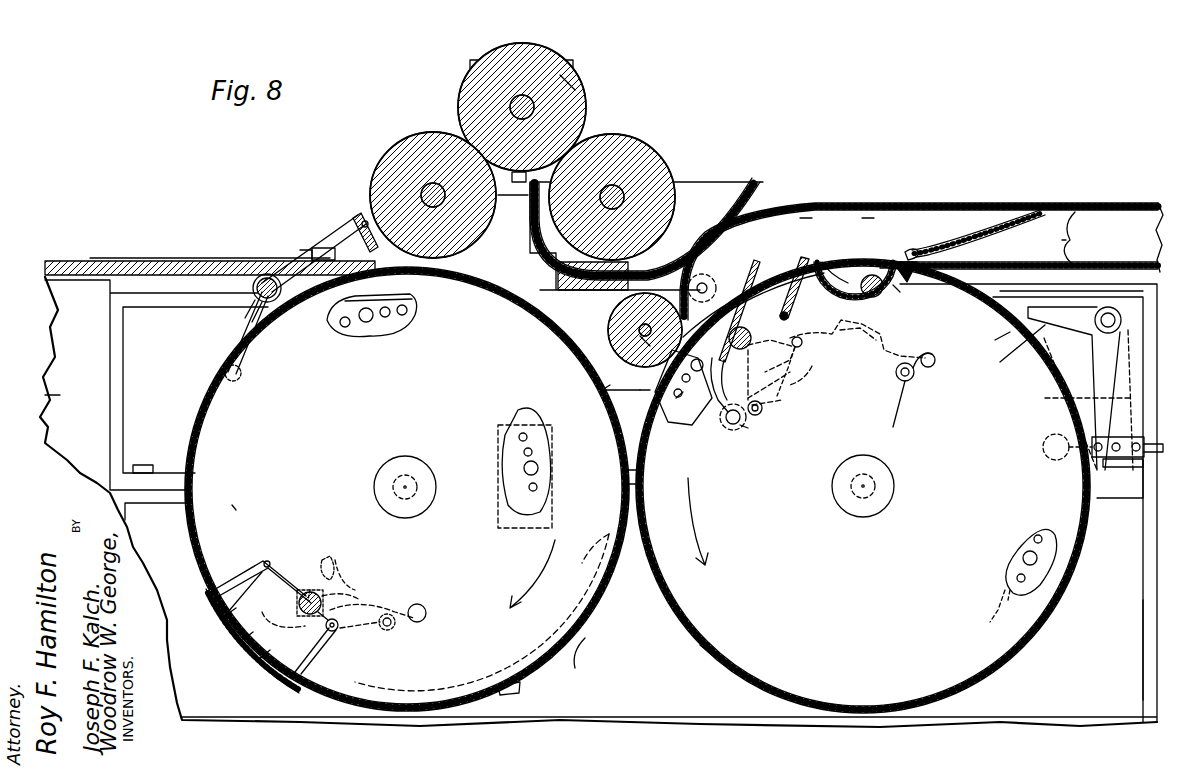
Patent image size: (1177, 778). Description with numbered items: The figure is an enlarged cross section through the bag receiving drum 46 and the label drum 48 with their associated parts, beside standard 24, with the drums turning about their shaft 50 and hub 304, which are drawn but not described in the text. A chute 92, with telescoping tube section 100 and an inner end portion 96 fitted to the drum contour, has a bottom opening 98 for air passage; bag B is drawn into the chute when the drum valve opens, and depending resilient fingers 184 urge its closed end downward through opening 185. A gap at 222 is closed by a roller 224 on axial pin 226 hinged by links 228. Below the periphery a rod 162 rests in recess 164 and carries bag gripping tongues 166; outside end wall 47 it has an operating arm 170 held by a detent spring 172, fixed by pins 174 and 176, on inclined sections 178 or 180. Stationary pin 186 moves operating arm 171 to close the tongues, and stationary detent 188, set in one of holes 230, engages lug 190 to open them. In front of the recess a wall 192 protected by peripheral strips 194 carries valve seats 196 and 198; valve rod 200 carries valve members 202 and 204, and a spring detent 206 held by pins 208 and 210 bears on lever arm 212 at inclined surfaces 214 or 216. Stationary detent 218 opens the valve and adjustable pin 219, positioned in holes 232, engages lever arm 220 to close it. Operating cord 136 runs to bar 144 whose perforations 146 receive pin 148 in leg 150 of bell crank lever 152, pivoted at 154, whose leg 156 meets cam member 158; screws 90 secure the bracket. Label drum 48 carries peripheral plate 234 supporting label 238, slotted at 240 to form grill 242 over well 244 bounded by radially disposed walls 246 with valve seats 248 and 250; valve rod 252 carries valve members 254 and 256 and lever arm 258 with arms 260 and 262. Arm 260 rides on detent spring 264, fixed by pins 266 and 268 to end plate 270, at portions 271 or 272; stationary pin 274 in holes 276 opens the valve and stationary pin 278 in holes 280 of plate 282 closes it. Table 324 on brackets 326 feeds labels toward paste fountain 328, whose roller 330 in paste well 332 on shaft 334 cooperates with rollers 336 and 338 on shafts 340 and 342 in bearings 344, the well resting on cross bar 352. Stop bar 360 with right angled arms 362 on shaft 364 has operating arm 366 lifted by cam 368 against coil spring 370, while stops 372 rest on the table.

The standard 24 is at (1104, 650).
The bag receiving drum 46 is at (705, 644).
The end wall 47 is at (863, 486).
The label drum 48 is at (584, 640).
The drum shaft 50 is at (858, 500).
The screws 90 is at (143, 465).
The chute 92 is at (1006, 204).
The inner end portion 96 is at (806, 222).
The opening 98 is at (868, 224).
The telescoping tube section 100 is at (1077, 206).
The operating cord 136 is at (1142, 500).
The bar 144 is at (1103, 464).
The perforations 146 is at (1118, 444).
The pin 148 is at (1044, 454).
The leg 150 is at (1045, 398).
The bell crank lever 152 is at (1008, 340).
The pivot 154 is at (1022, 313).
The leg 156 is at (1025, 340).
The cam member 158 is at (995, 340).
The rod 162 is at (882, 293).
The recess 164 is at (822, 262).
The bag gripping tongues 166 is at (900, 258).
The operating arm 170 is at (835, 320).
The operating arm 171 is at (900, 289).
The detent spring 172 is at (930, 354).
The pin 174 is at (913, 378).
The pin 176 is at (893, 425).
The inclined section 178 is at (820, 363).
The inclined section 180 is at (880, 333).
The resilient fingers 184 is at (948, 236).
The opening 185 is at (945, 265).
The stationary pin 186 is at (885, 268).
The stationary detent 188 is at (1030, 556).
The lug 190 is at (849, 266).
The wall 192 is at (771, 290).
The peripheral strips 194 is at (745, 300).
The valve seat 196 is at (784, 310).
The valve seat 198 is at (712, 396).
The valve rod 200 is at (612, 392).
The valve member 202 is at (699, 336).
The valve member 204 is at (730, 421).
The spring detent 206 is at (776, 401).
The pin 208 is at (760, 414).
The pin 210 is at (743, 426).
The lever arm 212 is at (780, 338).
The inclined surface 214 is at (778, 377).
The inclined surface 216 is at (766, 386).
The stationary detent 218 is at (803, 346).
The adjustable pin 219 is at (631, 400).
The lever arm 220 is at (746, 329).
The spacing 222 is at (642, 328).
The roller 224 is at (630, 322).
The axial pin 226 is at (628, 338).
The links 228 is at (698, 288).
The holes 230 is at (1017, 573).
The holes 232 is at (680, 396).
The peripheral plate 234 is at (512, 690).
The label 238 is at (194, 259).
The slots 240 is at (290, 672).
The grill 242 is at (255, 652).
The well 244 is at (247, 614).
The radially disposed walls 246 is at (250, 586).
The valve seat 248 is at (288, 570).
The valve seat 250 is at (340, 634).
The valve rod 252 is at (330, 578).
The valve member 254 is at (294, 566).
The valve member 256 is at (338, 628).
The lever arm 258 is at (310, 590).
The inwardly projecting arm 260 is at (338, 606).
The outwardly projecting arm 262 is at (265, 617).
The detent spring 264 is at (402, 598).
The pin 266 is at (427, 613).
The pin 268 is at (395, 626).
The end plate 270 is at (230, 507).
The spring portion 271 is at (335, 560).
The inclined portion 272 is at (372, 586).
The stationary pin 274 is at (366, 322).
The holes 276 is at (402, 315).
The stationary pin 278 is at (523, 469).
The holes 280 is at (524, 452).
The plate 282 is at (530, 440).
The drum 304 is at (407, 489).
The table 324 is at (62, 262).
The brackets 326 is at (68, 410).
The paste fountain 328 is at (557, 92).
The roller 330 is at (667, 160).
The paste well 332 is at (750, 182).
The shaft 334 is at (617, 192).
The roller 336 is at (572, 86).
The roller 338 is at (420, 140).
The shaft 340 is at (521, 98).
The shaft 342 is at (430, 190).
The bearings 344 is at (573, 68).
The cross bar 352 is at (558, 278).
The stop bar 360 is at (362, 222).
The right angled arms 362 is at (340, 242).
The shaft 364 is at (270, 258).
The operating arm 366 is at (240, 338).
The cam 368 is at (568, 611).
The coil spring 370 is at (243, 313).
The stops 372 is at (306, 250).
The bag B is at (1054, 241).